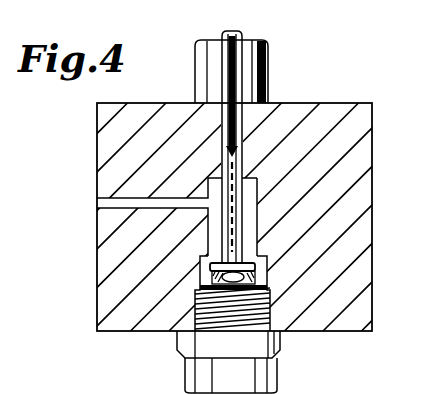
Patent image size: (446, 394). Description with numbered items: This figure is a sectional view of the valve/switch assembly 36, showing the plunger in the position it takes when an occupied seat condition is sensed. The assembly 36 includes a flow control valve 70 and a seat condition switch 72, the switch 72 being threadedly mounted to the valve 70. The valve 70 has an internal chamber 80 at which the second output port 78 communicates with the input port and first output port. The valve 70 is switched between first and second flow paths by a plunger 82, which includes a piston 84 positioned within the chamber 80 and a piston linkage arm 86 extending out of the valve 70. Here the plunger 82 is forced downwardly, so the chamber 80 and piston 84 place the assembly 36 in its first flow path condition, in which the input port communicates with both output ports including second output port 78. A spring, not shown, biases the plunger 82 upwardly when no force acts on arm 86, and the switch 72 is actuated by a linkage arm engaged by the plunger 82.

The valve/switch assembly 36 is at (97, 288).
The flow control valve 70 is at (97, 162).
The seat condition switch 72 is at (287, 343).
The second output port 78 is at (97, 204).
The internal chamber 80 is at (292, 160).
The plunger 82 is at (245, 145).
The piston 84 is at (268, 264).
The piston linkage arm 86 is at (239, 34).